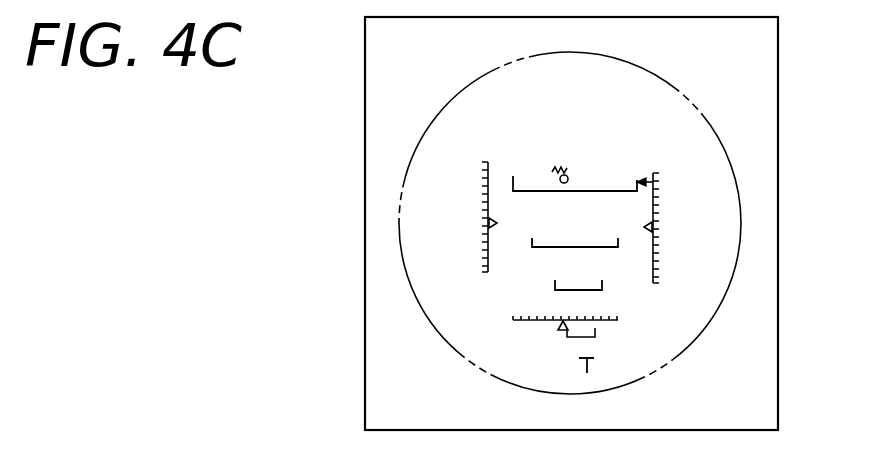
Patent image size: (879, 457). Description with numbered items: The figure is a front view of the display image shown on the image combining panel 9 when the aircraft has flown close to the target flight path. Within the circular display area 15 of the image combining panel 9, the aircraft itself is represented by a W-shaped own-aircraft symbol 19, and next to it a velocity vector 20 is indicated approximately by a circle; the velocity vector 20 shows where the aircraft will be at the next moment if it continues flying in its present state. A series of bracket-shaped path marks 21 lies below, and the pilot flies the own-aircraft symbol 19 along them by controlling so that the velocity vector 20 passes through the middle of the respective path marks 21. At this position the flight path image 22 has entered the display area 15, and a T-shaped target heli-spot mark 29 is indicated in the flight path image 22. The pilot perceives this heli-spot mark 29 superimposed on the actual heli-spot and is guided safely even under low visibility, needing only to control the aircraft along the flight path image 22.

The image combining panel 9 is at (365, 107).
The circular display area 15 is at (403, 188).
The own-aircraft symbol 19 is at (553, 170).
The velocity vector 20 is at (570, 177).
The path marks 21 is at (623, 192).
The flight path image 22 is at (653, 183).
The target heli-spot mark 29 is at (594, 361).